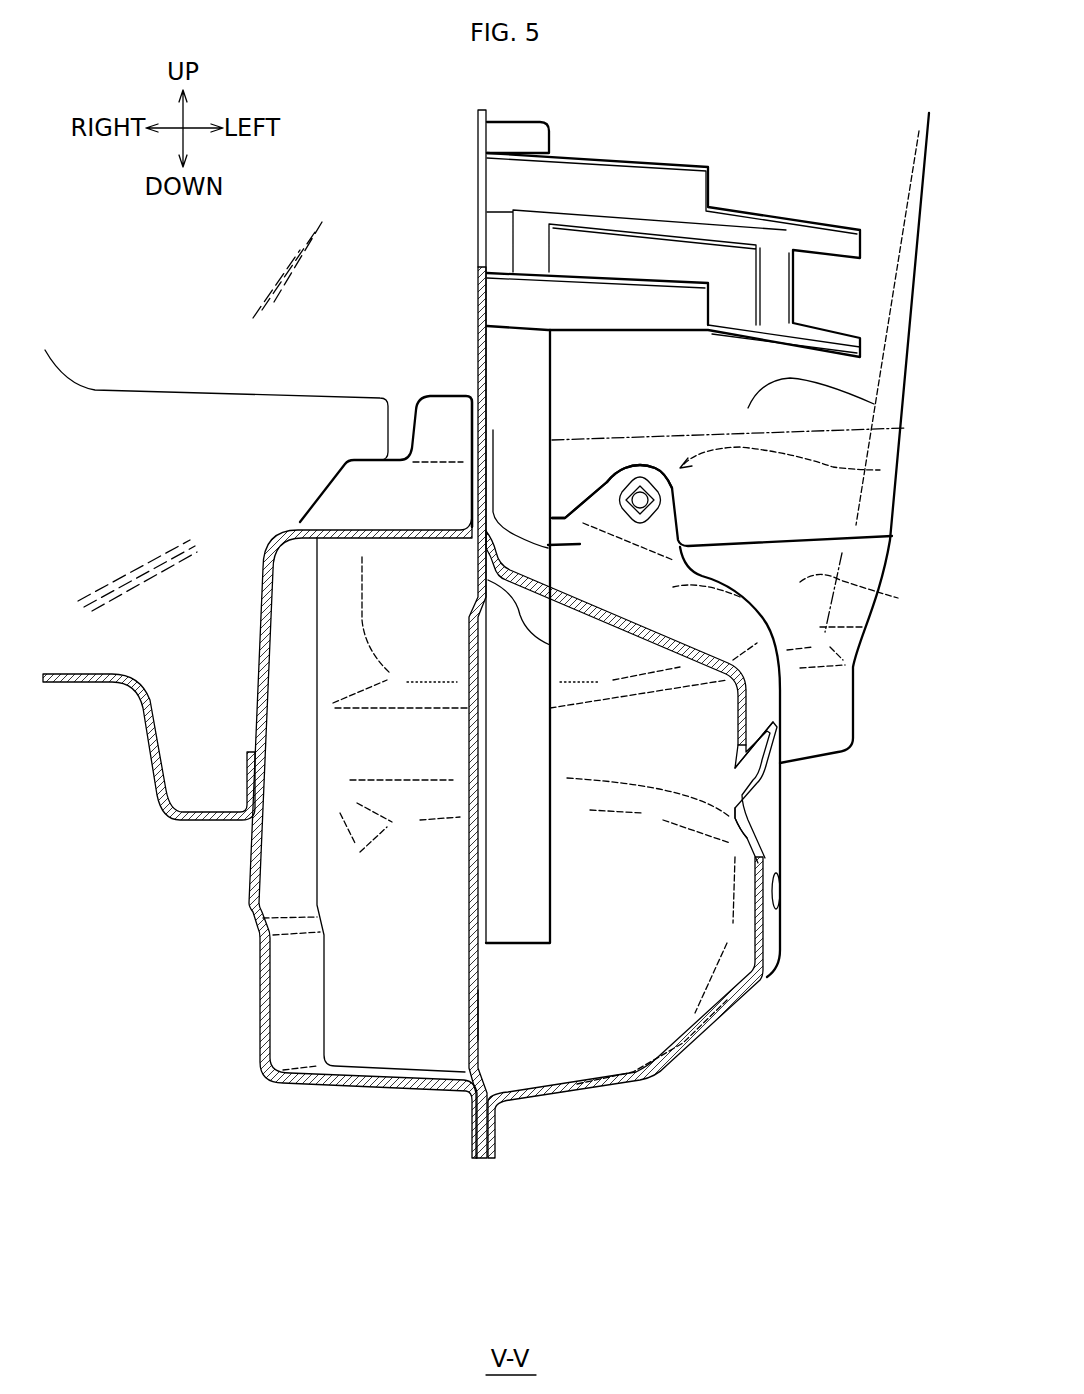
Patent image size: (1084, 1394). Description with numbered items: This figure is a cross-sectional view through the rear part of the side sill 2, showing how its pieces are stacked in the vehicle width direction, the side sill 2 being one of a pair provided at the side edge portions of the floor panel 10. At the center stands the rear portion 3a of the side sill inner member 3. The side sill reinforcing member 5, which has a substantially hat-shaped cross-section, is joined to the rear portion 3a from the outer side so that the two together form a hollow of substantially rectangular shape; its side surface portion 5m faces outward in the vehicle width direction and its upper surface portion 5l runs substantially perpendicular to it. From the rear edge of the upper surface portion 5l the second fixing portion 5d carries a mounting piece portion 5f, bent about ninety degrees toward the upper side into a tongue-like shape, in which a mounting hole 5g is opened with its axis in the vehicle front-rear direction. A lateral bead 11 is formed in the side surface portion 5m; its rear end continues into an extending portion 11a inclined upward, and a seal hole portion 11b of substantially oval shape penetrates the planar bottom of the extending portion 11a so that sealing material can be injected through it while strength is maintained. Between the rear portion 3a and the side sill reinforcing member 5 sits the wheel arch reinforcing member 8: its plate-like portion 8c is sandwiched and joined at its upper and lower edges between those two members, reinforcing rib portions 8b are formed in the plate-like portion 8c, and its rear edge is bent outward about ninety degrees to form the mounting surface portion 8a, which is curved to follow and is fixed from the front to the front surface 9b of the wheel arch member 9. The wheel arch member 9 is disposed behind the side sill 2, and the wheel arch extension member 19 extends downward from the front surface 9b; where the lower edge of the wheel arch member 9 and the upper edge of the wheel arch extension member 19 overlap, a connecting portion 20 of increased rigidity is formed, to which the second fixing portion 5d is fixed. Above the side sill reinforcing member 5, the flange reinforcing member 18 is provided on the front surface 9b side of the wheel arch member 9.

The side sill 2 is at (582, 696).
The side sill inner member 3 is at (364, 779).
The rear portion 3a is at (479, 392).
The side sill reinforcing member 5 is at (700, 804).
The second fixing portion 5d is at (596, 470).
The mounting piece portion 5f is at (653, 465).
The mounting hole 5g is at (660, 501).
The upper surface portion 5l is at (865, 627).
The side surface portion 5m is at (775, 930).
The wheel arch reinforcing member 8 is at (511, 671).
The mounting surface portion 8a is at (527, 920).
The reinforcing rib portions 8b is at (488, 1012).
The plate-like portion 8c is at (552, 643).
The wheel arch member 9 is at (931, 343).
The front surface 9b is at (874, 404).
The floor panel 10 is at (117, 652).
The lateral bead 11 is at (820, 797).
The extending portion 11a is at (783, 797).
The seal hole portion 11b is at (772, 828).
The flange reinforcing member 18 is at (781, 219).
The wheel arch extension member 19 is at (883, 602).
The connecting portion 20 is at (880, 470).